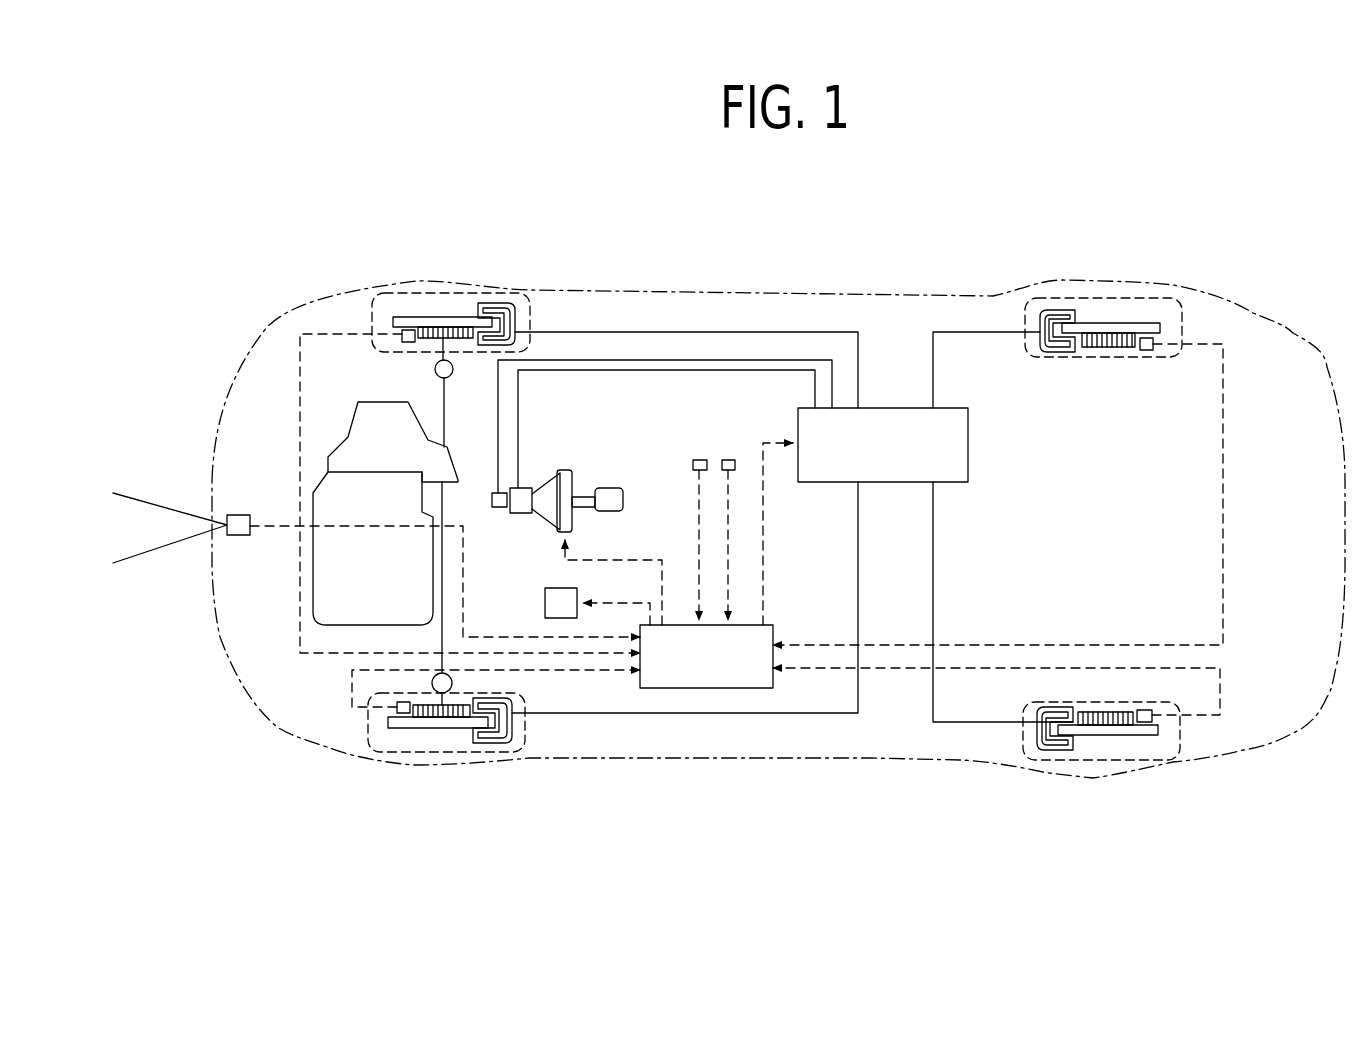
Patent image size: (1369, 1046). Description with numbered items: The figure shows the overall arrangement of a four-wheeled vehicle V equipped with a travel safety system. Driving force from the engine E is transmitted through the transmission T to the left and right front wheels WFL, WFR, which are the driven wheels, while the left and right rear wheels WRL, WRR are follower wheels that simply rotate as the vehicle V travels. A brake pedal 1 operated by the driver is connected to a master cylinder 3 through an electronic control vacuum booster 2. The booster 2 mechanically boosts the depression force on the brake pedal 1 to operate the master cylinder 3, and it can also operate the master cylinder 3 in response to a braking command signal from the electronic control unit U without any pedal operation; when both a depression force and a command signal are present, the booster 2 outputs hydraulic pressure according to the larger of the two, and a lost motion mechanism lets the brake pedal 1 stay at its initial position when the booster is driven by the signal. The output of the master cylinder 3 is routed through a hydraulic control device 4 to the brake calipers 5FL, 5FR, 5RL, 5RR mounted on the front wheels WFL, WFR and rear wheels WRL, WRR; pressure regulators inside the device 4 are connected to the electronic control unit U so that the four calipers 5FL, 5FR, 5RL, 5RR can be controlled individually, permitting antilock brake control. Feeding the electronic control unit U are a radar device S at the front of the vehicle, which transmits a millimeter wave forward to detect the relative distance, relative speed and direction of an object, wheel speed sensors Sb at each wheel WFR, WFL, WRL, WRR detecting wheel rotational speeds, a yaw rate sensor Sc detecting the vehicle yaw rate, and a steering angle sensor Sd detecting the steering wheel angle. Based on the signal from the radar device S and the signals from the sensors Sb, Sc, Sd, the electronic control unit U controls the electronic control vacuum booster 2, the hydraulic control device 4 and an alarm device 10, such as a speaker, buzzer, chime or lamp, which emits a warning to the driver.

The vehicle V is at (767, 257).
The right front wheel WFR is at (418, 293).
The left front wheel WFL is at (417, 752).
The right rear wheel WRR is at (1090, 300).
The left rear wheel WRL is at (1085, 760).
The brake caliper 5FR is at (495, 302).
The brake caliper 5FL is at (498, 748).
The brake caliper 5RR is at (1042, 308).
The brake caliper 5RL is at (1048, 755).
The wheel speed sensor Sb is at (402, 337).
The transmission T is at (392, 455).
The engine E is at (376, 573).
The radar device S is at (240, 540).
The hydraulic control device 4 is at (895, 458).
The master cylinder 3 is at (502, 513).
The electronic control vacuum booster 2 is at (562, 527).
The brake pedal 1 is at (617, 502).
The alarm device 10 is at (545, 605).
The yaw rate sensor Sc is at (697, 458).
The steering angle sensor Sd is at (732, 458).
The electronic control unit U is at (712, 675).